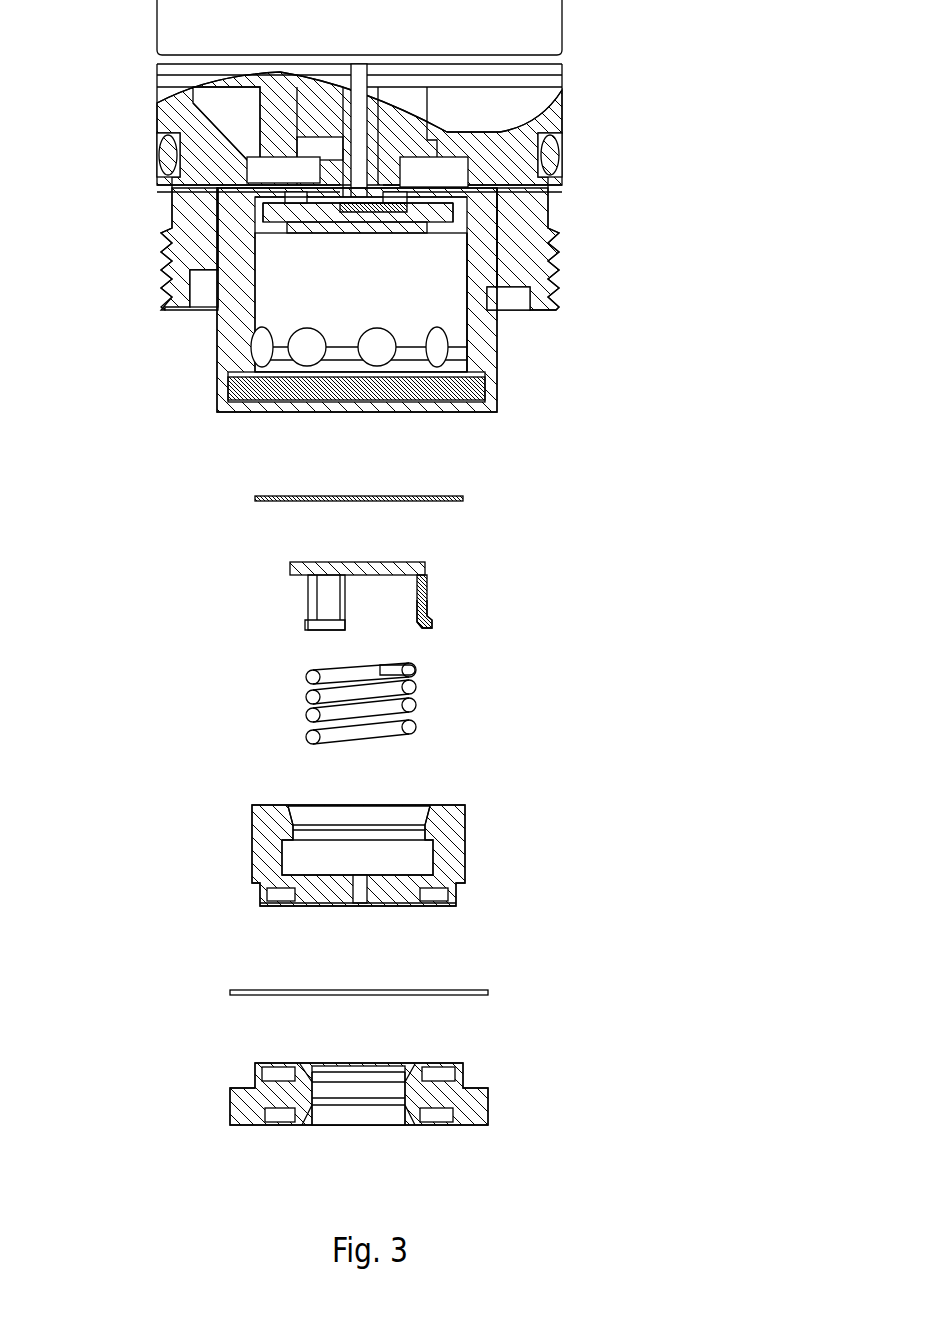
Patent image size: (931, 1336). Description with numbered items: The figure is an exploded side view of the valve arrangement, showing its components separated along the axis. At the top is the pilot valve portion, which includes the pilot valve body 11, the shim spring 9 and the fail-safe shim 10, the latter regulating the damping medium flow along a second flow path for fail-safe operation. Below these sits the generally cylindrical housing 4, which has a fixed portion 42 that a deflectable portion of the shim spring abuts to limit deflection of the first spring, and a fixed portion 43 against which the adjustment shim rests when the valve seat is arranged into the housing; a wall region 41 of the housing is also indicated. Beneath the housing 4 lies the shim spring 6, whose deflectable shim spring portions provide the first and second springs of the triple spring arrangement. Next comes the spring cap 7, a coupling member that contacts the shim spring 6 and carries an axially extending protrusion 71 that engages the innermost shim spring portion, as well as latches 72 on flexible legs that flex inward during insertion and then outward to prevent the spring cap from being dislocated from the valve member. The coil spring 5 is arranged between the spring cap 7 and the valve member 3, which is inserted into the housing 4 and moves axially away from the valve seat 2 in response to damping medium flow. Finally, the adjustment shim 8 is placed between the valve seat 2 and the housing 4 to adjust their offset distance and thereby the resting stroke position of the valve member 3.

The valve seat 2 is at (230, 1101).
The valve member 3 is at (250, 868).
The housing 4 is at (220, 342).
The coil spring 5 is at (307, 698).
The shim spring 6 is at (463, 498).
The spring cap 7 is at (397, 594).
The adjustment shim 8 is at (488, 992).
The shim spring 9 is at (200, 189).
The fail-safe shim 10 is at (255, 188).
The pilot valve body 11 is at (157, 122).
The cup wall 41 is at (457, 243).
The fixed portion 42 is at (433, 223).
The fixed portion 43 is at (475, 378).
The protrusion 71 is at (357, 562).
The latches 72 is at (430, 623).